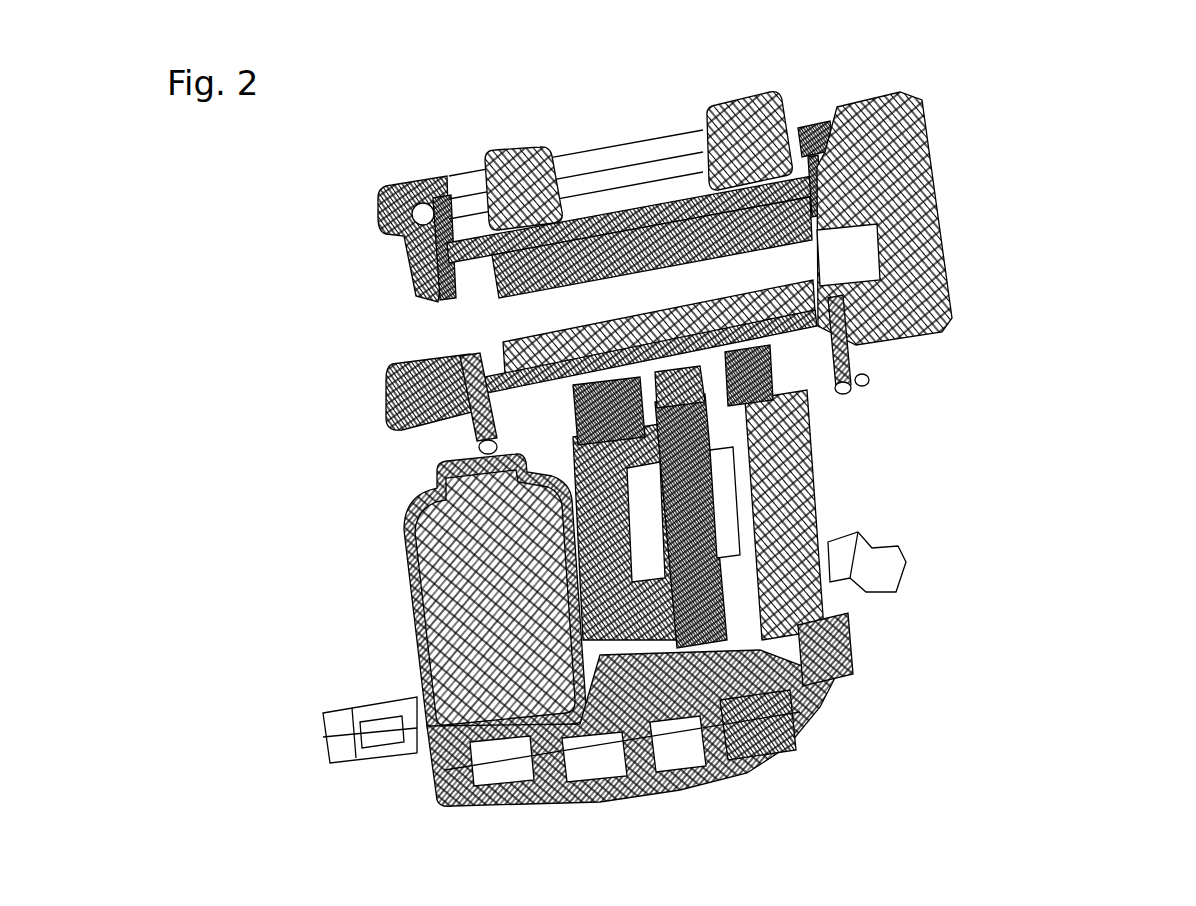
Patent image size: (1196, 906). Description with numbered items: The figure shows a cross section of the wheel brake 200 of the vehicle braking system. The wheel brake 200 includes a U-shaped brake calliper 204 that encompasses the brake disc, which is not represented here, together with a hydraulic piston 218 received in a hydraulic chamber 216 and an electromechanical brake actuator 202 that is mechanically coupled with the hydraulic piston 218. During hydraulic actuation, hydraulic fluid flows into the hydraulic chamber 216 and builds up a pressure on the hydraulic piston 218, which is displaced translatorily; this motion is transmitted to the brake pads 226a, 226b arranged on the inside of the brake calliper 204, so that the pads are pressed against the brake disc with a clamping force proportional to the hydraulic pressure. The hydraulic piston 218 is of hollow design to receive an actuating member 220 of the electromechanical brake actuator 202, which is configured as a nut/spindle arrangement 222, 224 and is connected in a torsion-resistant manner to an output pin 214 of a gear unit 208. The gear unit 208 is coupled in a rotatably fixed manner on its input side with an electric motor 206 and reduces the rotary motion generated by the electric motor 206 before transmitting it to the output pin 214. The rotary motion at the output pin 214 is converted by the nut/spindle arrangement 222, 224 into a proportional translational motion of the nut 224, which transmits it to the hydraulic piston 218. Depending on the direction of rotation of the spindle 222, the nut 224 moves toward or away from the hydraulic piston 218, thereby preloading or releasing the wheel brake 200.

The wheel brake 200 is at (698, 447).
The electromechanical brake actuator 202 is at (631, 591).
The brake calliper 204 is at (663, 255).
The electric motor 206 is at (412, 632).
The gear unit 208 is at (680, 786).
The output pin 214 is at (820, 624).
The hydraulic chamber 216 is at (770, 460).
The hydraulic piston 218 is at (848, 366).
The actuating member 220 is at (733, 517).
The spindle 222 is at (773, 498).
The nut 224 is at (803, 428).
The brake pad 226a is at (520, 330).
The brake pad 226b is at (460, 182).